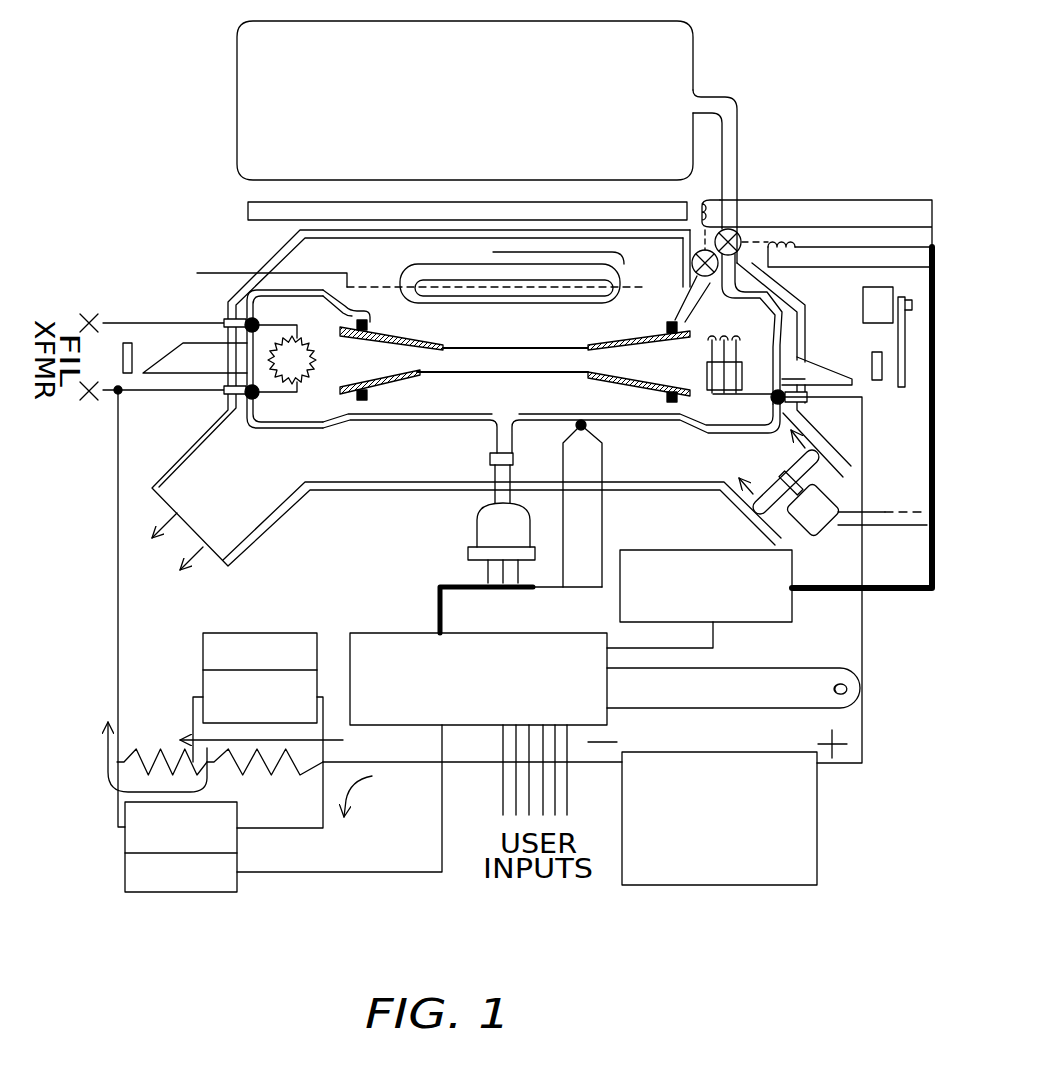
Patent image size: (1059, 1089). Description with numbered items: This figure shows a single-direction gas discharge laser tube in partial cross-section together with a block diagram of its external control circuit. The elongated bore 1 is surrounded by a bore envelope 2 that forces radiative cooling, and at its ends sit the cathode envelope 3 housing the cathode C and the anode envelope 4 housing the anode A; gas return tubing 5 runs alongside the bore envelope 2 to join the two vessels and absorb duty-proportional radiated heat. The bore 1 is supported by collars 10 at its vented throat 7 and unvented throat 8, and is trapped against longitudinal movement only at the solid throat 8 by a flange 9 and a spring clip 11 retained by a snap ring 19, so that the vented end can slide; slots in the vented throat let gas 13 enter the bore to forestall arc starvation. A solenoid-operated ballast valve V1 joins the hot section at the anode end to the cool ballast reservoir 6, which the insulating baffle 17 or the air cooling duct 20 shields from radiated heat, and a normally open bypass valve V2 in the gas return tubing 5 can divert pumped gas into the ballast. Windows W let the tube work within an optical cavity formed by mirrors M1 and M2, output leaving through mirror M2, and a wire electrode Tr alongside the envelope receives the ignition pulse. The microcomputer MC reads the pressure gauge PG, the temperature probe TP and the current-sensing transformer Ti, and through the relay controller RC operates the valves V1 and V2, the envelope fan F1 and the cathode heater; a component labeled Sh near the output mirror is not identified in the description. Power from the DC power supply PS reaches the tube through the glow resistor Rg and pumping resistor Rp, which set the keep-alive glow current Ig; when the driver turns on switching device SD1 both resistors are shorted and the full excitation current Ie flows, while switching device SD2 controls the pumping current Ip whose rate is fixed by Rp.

The bore 1 is at (480, 325).
The bore envelope 2 is at (387, 422).
The cathode envelope 3 is at (270, 428).
The anode envelope 4 is at (733, 433).
The gas return tubing 5 is at (407, 268).
The ballast reservoir 6 is at (693, 50).
The vented throat 7 is at (393, 376).
The unvented throat 8 is at (627, 380).
The flange 9 is at (687, 333).
The collars 10 is at (667, 327).
The spring clip 11 is at (660, 396).
The gas 13 is at (393, 347).
The insulating baffle 17 is at (248, 220).
The snap ring 19 is at (643, 333).
The air cooling duct 20 is at (350, 490).
The ballast valve V1 is at (737, 230).
The bypass valve V2 is at (684, 267).
The trigger wire electrode Tr is at (400, 275).
The temperature probe TP is at (576, 428).
The pressure gauge PG is at (501, 518).
The mirror M1 is at (131, 373).
The output mirror M2 is at (882, 380).
The shutter Sh is at (887, 337).
The envelope fan F1 is at (833, 484).
The current-sensing transformer Ti is at (748, 688).
The cathode C is at (287, 358).
The anode A is at (739, 365).
The windows W is at (501, 348).
The microcomputer MC is at (478, 679).
The relay controller RC is at (706, 588).
The DC power supply PS is at (719, 818).
The switching device SD1 is at (181, 847).
The switching device SD2 is at (260, 678).
The pumping resistor Rp is at (162, 743).
The glow resistor Rg is at (265, 782).
The glow discharge current Ig is at (277, 745).
The pumping current Ip is at (137, 757).
The excitation current Ie is at (363, 802).